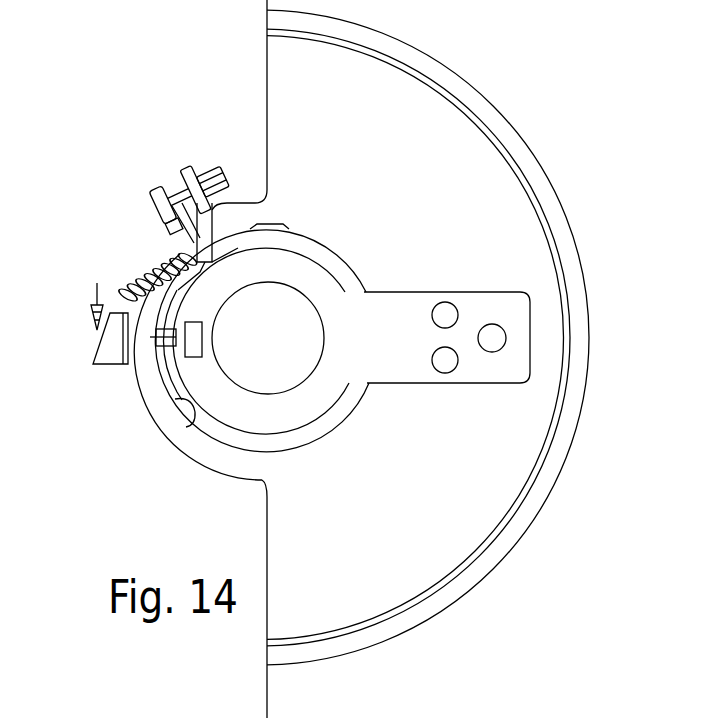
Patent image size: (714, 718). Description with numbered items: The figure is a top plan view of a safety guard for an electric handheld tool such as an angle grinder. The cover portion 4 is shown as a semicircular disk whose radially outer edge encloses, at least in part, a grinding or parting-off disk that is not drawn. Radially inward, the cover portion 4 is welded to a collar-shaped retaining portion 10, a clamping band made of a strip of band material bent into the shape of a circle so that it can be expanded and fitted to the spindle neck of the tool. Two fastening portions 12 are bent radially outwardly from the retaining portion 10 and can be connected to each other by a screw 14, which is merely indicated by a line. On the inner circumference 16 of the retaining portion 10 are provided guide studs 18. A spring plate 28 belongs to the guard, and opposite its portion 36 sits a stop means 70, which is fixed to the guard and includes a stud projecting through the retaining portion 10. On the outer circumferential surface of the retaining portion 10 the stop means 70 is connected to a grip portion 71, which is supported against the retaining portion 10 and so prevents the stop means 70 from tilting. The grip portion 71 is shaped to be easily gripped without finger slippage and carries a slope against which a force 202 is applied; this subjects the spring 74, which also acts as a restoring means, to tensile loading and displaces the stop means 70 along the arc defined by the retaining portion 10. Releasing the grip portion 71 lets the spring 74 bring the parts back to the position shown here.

The cover portion 4 is at (472, 528).
The collar-shaped retaining portion 10 is at (153, 402).
The fastening portions 12 is at (167, 183).
The screw 14 is at (178, 175).
The inner circumference 16 is at (170, 250).
The guide studs 18 is at (285, 226).
The spring plate 28 is at (318, 268).
The portion of the spring plate 36 is at (410, 308).
The stop means 70 is at (250, 272).
The grip portion 71 is at (110, 353).
The spring 74 is at (142, 257).
The force 202 is at (97, 287).